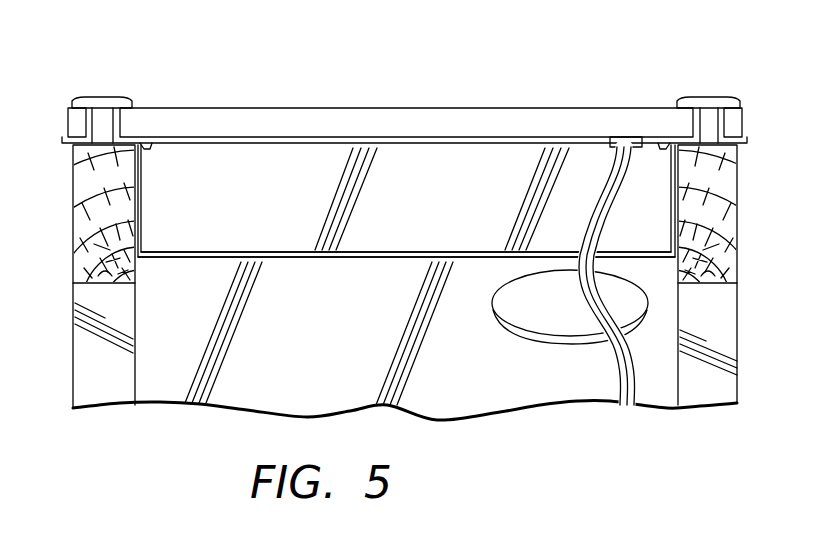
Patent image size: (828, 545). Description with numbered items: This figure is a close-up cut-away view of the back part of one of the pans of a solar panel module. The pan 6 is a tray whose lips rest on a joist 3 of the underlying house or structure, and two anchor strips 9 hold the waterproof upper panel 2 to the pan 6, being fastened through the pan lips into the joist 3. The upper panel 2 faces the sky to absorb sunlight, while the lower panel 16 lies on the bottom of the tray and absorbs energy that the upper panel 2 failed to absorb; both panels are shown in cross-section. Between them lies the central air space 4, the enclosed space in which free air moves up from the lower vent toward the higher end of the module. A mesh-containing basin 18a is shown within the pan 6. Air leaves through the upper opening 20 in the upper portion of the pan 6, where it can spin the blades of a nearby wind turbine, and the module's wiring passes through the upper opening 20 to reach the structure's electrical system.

The upper panel 2 is at (451, 108).
The joist 3 is at (73, 219).
The central air space 4 is at (302, 176).
The pan 6 is at (207, 136).
The anchor strips 9 is at (100, 97).
The lower panel 16 is at (405, 250).
The mesh-containing basin 18a is at (141, 207).
The upper opening 20 is at (535, 344).